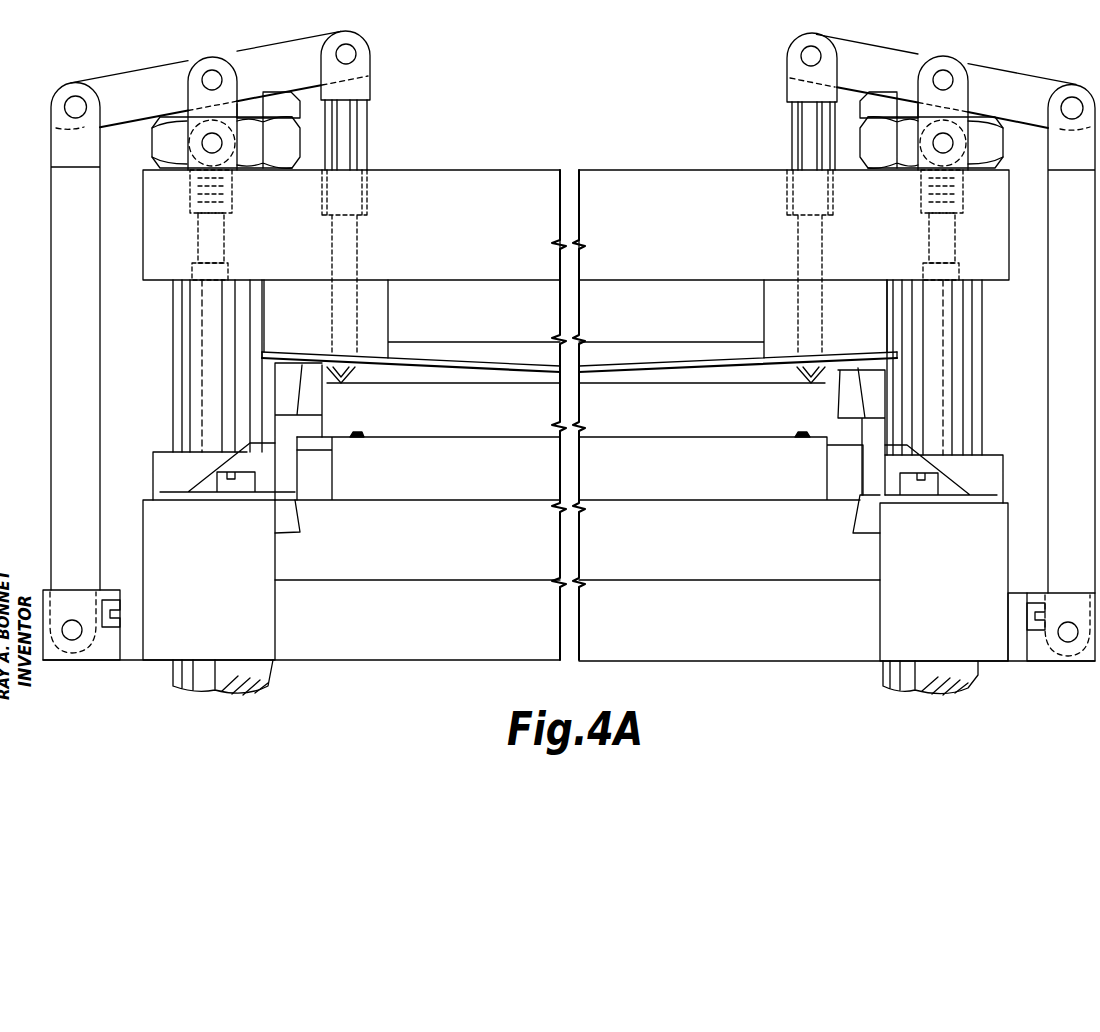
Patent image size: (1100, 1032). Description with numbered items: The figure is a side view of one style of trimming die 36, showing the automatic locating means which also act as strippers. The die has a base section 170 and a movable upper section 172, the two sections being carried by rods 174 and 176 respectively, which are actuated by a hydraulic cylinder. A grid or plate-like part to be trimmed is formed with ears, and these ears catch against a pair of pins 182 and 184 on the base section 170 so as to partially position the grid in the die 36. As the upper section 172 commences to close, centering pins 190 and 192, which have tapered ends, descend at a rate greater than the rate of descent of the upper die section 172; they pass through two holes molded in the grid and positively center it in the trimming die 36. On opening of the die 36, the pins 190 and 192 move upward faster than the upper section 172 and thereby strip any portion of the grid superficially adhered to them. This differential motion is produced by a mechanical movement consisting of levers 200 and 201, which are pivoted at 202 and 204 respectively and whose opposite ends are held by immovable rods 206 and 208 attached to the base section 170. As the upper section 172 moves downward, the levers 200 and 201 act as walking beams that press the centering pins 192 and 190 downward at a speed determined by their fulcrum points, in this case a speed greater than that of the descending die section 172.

The trimming die 36 is at (432, 697).
The base section 170 is at (775, 661).
The movable upper section 172 is at (668, 175).
The rod 174 is at (972, 681).
The rod 176 is at (270, 684).
The pin 182 is at (800, 432).
The pin 184 is at (362, 433).
The centering pin 190 is at (332, 323).
The centering pin 192 is at (822, 340).
The lever 200 is at (879, 54).
The lever 201 is at (294, 47).
The pivot 202 is at (944, 75).
The pivot 204 is at (212, 70).
The immovable rod 206 is at (1048, 350).
The immovable rod 208 is at (51, 343).